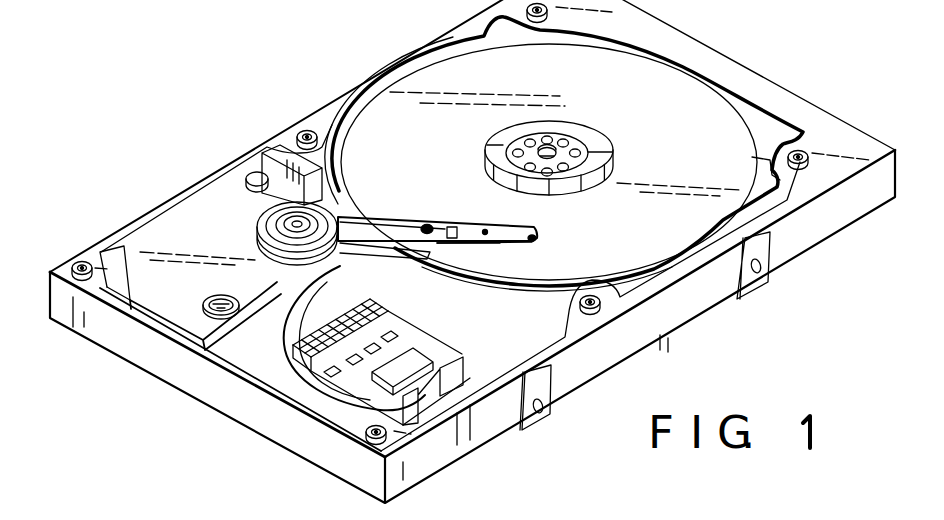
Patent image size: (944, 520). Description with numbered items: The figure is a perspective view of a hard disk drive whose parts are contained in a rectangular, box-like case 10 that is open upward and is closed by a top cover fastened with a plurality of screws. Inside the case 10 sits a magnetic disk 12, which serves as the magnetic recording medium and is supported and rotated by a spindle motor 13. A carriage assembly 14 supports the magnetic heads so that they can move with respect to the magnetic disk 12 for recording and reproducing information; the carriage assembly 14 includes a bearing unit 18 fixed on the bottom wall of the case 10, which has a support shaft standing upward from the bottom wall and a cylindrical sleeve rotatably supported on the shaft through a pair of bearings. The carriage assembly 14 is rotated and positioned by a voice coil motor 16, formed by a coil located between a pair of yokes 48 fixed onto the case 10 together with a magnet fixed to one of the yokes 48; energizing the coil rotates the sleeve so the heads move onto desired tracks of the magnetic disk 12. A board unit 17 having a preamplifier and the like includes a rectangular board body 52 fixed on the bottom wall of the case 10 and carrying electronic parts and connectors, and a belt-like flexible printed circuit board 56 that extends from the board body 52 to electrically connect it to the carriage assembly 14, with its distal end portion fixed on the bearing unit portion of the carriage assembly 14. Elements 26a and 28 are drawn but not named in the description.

The case 10 is at (793, 248).
The magnetic disk 12 is at (682, 88).
The spindle motor 13 is at (596, 140).
The carriage assembly 14 is at (383, 225).
The voice coil motor 16 is at (178, 299).
The board unit 17 is at (423, 339).
The bearing unit 18 is at (334, 206).
The head suspension 26a is at (415, 226).
The read/write head 28 is at (509, 230).
The yokes 48 is at (181, 222).
The board body 52 is at (398, 332).
The flexible printed circuit board 56 is at (293, 298).